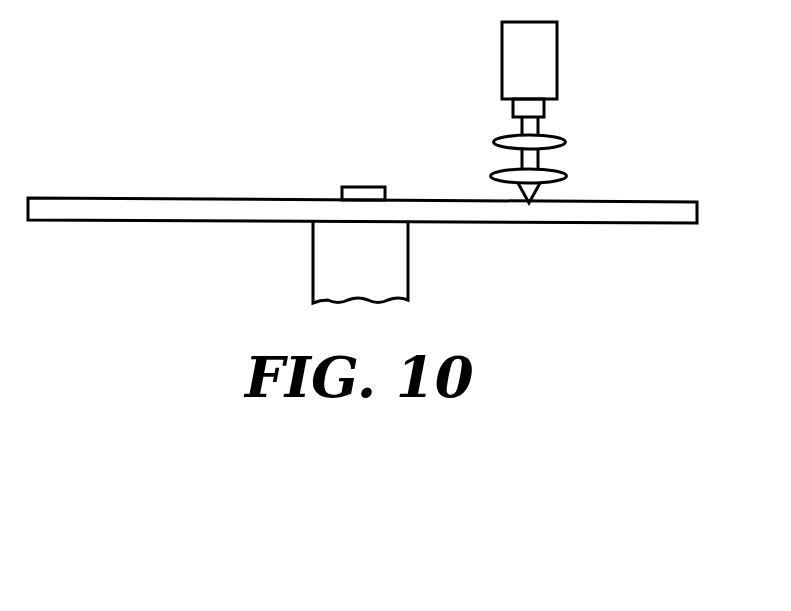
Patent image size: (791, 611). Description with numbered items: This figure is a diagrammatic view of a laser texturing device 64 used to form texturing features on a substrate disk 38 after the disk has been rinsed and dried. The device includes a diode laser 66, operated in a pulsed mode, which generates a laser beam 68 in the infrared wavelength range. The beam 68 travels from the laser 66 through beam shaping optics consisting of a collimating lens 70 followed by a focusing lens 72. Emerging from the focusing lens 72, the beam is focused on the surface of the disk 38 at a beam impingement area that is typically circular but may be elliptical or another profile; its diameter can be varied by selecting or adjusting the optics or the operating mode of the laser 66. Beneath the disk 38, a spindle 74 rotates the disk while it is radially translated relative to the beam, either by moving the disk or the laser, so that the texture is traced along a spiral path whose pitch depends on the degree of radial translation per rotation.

The substrate disk 38 is at (130, 212).
The laser texturing device 64 is at (313, 122).
The diode laser 66 is at (540, 62).
The laser beam 68 is at (538, 125).
The collimating lens 70 is at (497, 140).
The focusing lens 72 is at (555, 174).
The spindle 74 is at (390, 275).